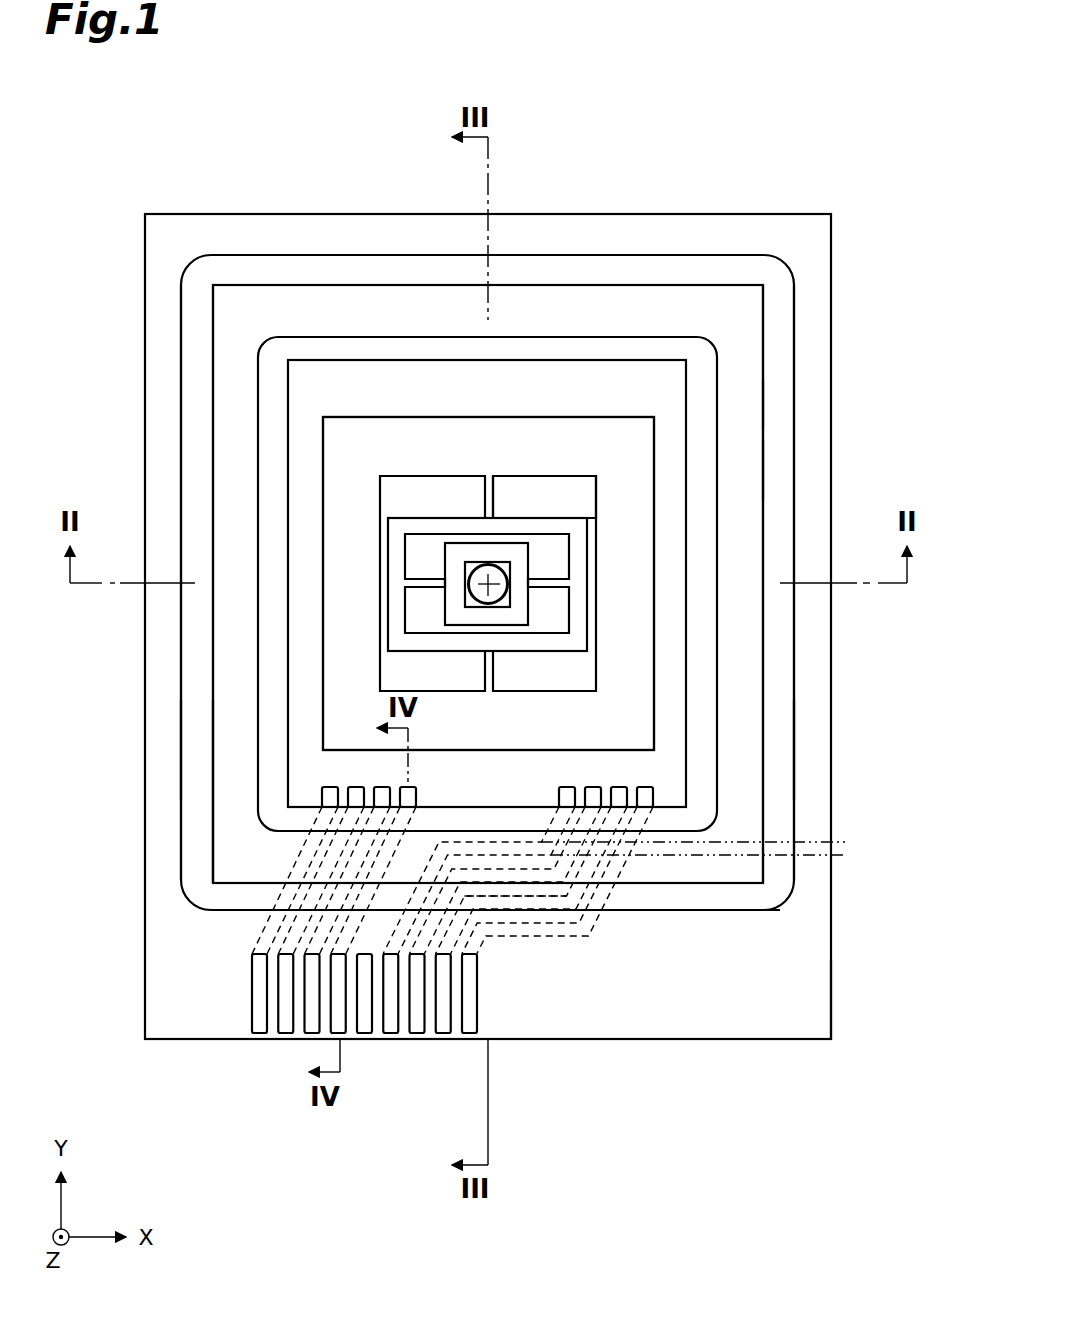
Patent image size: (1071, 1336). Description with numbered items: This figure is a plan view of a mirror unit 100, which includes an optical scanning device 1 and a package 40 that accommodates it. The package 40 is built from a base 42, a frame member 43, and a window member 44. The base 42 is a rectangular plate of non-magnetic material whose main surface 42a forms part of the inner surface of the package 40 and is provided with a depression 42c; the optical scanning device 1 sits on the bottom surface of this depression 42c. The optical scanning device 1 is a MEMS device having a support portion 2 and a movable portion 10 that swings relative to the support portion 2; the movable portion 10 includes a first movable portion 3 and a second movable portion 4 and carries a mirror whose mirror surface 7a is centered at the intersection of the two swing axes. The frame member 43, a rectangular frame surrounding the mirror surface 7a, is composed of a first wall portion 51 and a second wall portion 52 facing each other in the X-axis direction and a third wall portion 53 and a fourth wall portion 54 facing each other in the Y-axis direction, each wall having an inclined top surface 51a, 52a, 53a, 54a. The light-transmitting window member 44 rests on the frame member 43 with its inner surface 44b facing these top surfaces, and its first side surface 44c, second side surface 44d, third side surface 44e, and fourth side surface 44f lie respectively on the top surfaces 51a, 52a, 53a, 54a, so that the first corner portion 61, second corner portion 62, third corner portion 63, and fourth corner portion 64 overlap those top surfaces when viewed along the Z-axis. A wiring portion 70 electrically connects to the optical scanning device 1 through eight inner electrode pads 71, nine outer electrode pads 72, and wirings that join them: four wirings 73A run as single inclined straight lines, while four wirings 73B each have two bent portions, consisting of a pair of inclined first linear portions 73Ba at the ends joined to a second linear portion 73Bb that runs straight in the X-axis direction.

The mirror unit 100 is at (850, 153).
The optical scanning device 1 is at (630, 409).
The support portion 2 is at (358, 445).
The first movable portion 3 is at (457, 542).
The second movable portion 4 is at (413, 515).
The mirror surface 7a is at (495, 566).
The movable portion 10 is at (555, 507).
The package 40 is at (530, 626).
The base 42 is at (833, 955).
The main surface 42a is at (788, 1007).
The depression 42c is at (683, 671).
The frame member 43 is at (795, 613).
The window member 44 is at (765, 428).
The inner surface 44b is at (735, 403).
The first side surface 44c is at (763, 457).
The second side surface 44d is at (213, 460).
The third side surface 44e is at (653, 887).
The fourth side surface 44f is at (410, 285).
The first wall portion 51 is at (795, 702).
The top surface 51a is at (775, 750).
The second wall portion 52 is at (180, 688).
The top surface 52a is at (198, 745).
The third wall portion 53 is at (740, 893).
The top surface 53a is at (757, 910).
The fourth wall portion 54 is at (585, 255).
The top surface 54a is at (643, 273).
The first corner portion 61 is at (765, 792).
The second corner portion 62 is at (213, 802).
The third corner portion 63 is at (685, 885).
The fourth corner portion 64 is at (527, 285).
The wiring portion 70 is at (240, 1005).
The inner electrode pad 71 is at (383, 788).
The outer electrode pad 72 is at (312, 1018).
The wiring 73A is at (335, 893).
The wiring 73B is at (577, 936).
The first linear portion 73Ba is at (845, 849).
The second linear portion 73Bb is at (513, 878).